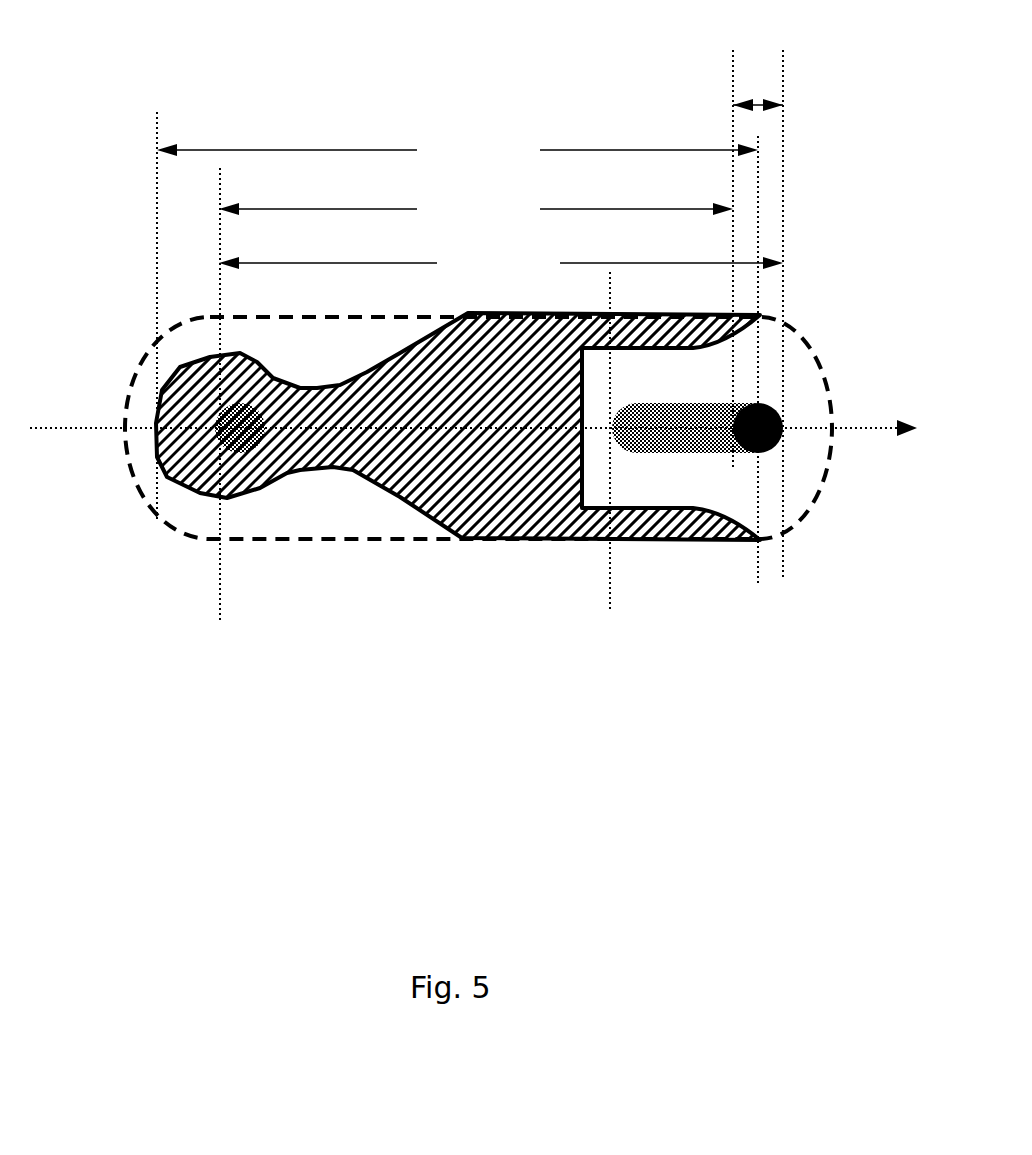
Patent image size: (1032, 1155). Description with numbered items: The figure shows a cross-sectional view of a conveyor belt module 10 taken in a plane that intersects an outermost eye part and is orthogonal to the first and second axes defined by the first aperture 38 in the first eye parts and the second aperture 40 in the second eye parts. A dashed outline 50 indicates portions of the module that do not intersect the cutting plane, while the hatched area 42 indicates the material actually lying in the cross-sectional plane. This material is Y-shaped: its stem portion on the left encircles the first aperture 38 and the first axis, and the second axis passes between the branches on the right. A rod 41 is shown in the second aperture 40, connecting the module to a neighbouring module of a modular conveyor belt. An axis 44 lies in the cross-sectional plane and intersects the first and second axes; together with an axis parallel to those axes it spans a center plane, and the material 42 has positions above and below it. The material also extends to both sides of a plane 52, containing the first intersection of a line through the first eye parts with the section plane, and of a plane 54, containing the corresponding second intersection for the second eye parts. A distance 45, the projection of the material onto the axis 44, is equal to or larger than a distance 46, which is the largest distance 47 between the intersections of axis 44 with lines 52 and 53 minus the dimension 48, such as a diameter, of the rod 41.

The conveyor belt module 10 is at (597, 94).
The first aperture 38 is at (255, 452).
The second aperture 40 is at (640, 440).
The rod 41 is at (772, 447).
The hatched area 42 is at (497, 503).
The axis 44 is at (105, 428).
The distance 45 is at (457, 348).
The distance 46 is at (476, 260).
The largest distance 47 is at (501, 263).
The dimension 48 is at (753, 102).
The outer envelope 50 is at (383, 540).
The plane 52 is at (224, 588).
The dotted line 53 is at (784, 550).
The plane 54 is at (610, 573).